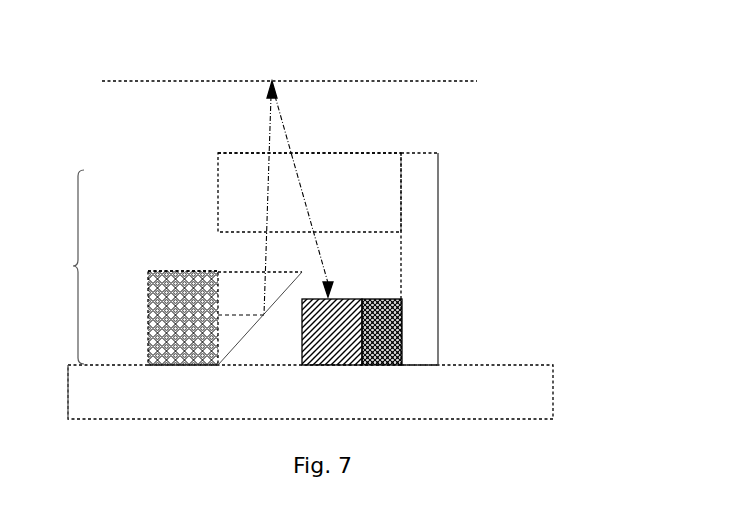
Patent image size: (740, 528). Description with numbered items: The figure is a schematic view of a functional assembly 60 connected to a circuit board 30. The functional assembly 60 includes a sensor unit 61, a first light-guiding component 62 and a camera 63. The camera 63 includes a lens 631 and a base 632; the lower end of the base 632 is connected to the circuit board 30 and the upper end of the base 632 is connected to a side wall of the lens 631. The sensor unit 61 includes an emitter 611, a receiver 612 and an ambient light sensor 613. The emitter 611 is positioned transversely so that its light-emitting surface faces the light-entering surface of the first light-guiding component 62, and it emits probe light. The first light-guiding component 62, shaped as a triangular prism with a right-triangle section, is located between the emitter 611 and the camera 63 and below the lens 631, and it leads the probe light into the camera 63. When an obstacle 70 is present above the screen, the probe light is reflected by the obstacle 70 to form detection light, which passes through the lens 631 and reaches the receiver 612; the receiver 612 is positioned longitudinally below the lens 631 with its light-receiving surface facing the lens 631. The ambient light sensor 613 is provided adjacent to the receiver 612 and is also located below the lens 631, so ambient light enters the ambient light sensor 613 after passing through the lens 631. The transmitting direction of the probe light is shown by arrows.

The obstacle 70 is at (453, 81).
The circuit board 30 is at (537, 402).
The functional assembly 60 is at (62, 267).
The camera 63 is at (328, 172).
The lens 631 is at (370, 172).
The base 632 is at (429, 227).
The sensor unit 61 is at (158, 313).
The emitter 611 is at (163, 270).
The first light-guiding component 62 is at (238, 282).
The receiver 612 is at (343, 298).
The ambient light sensor 613 is at (388, 285).